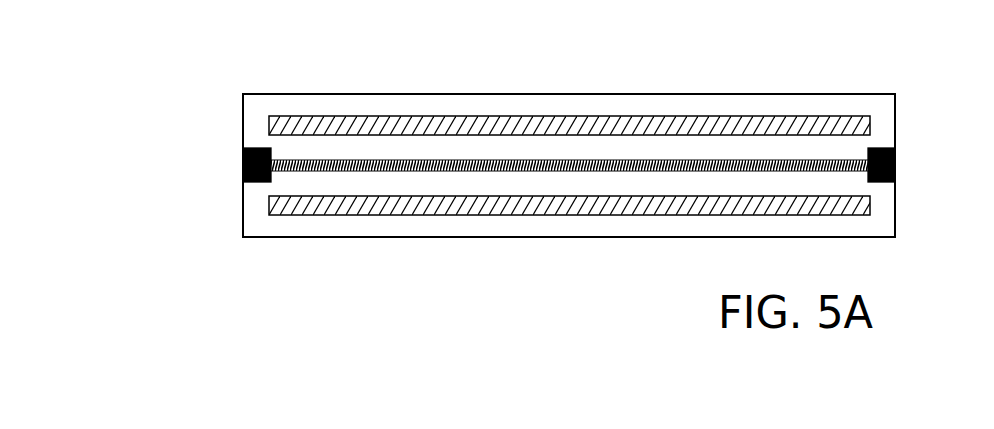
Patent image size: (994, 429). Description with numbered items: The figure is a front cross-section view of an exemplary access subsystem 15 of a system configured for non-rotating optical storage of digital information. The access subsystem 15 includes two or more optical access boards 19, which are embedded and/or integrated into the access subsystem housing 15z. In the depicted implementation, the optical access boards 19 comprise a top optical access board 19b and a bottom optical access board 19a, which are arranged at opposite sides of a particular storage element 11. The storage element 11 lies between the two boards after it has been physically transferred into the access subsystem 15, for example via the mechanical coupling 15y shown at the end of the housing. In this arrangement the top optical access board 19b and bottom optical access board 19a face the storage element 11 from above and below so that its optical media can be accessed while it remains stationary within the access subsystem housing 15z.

The storage element 11 is at (287, 162).
The access subsystem 15 is at (471, 179).
The access subsystem housing 15z is at (480, 236).
The mechanical coupling 15y is at (892, 148).
The optical access boards 19 is at (459, 179).
The top optical access board 19b is at (653, 132).
The bottom optical access board 19a is at (648, 214).